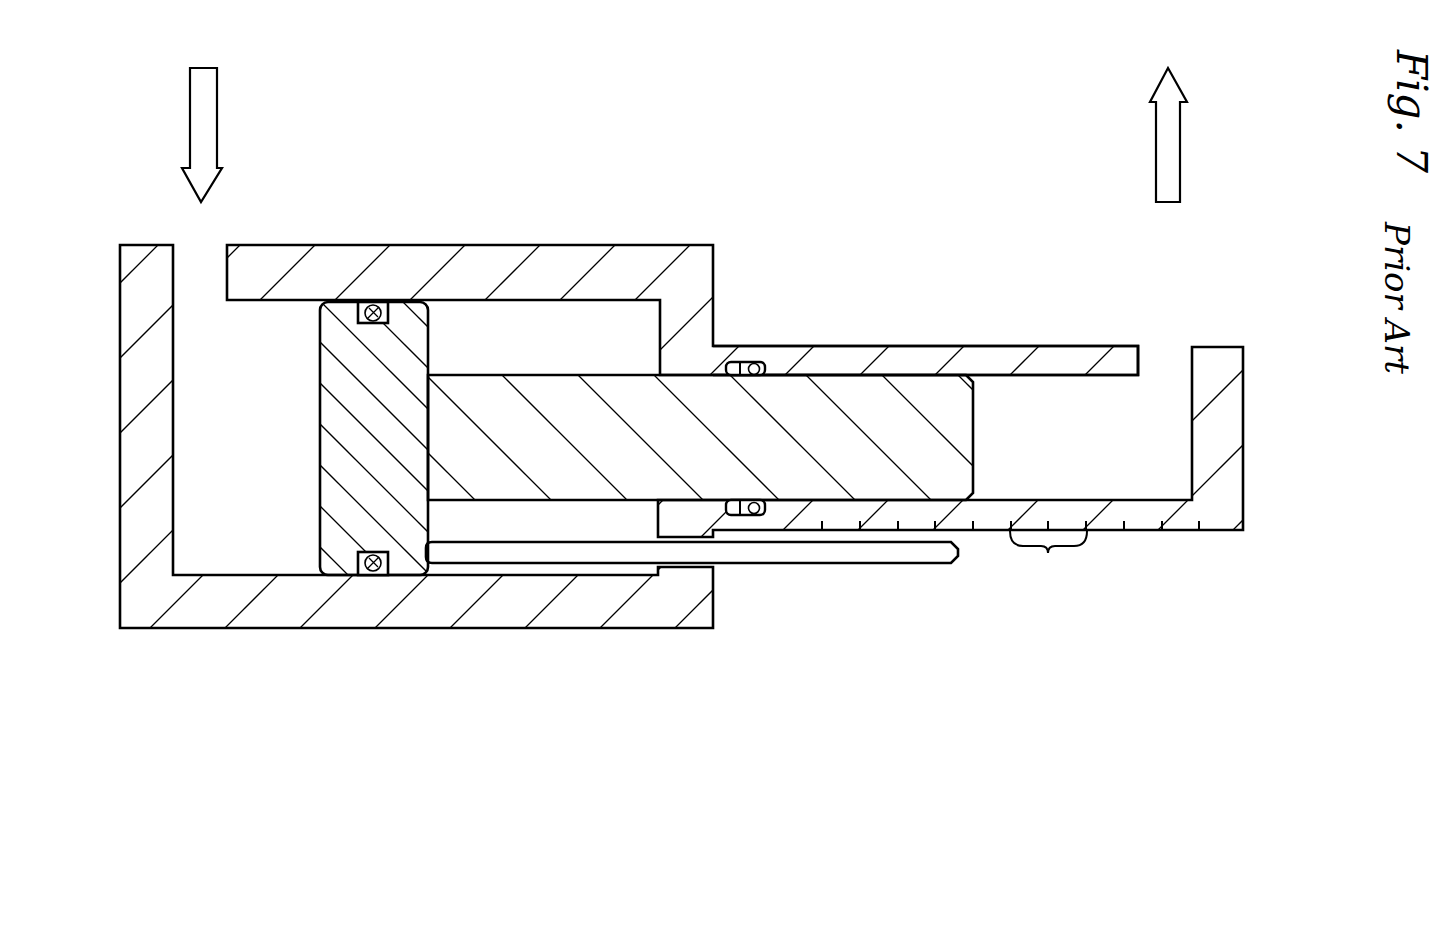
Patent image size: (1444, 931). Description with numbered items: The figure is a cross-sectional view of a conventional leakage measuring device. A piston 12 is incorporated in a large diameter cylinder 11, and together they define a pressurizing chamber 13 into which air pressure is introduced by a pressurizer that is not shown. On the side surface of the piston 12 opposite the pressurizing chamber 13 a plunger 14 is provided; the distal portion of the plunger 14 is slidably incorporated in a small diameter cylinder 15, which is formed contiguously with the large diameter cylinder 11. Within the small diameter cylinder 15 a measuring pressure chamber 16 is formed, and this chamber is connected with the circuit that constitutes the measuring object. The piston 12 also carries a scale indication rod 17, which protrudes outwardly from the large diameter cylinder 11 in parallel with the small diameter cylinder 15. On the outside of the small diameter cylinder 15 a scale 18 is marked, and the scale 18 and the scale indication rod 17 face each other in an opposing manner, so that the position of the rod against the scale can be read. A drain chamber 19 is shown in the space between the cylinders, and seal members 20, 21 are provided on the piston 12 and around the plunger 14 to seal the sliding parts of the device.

The large diameter cylinder 11 is at (569, 258).
The piston 12 is at (400, 326).
The pressurizing chamber 13 is at (235, 555).
The plunger 14 is at (845, 388).
The small diameter cylinder 15 is at (1073, 357).
The measuring pressure chamber 16 is at (1152, 485).
The scale indication rod 17 is at (877, 557).
The scale 18 is at (1010, 556).
The drain chamber 19 is at (552, 527).
The seal member 20 is at (376, 576).
The seal member 21 is at (748, 360).